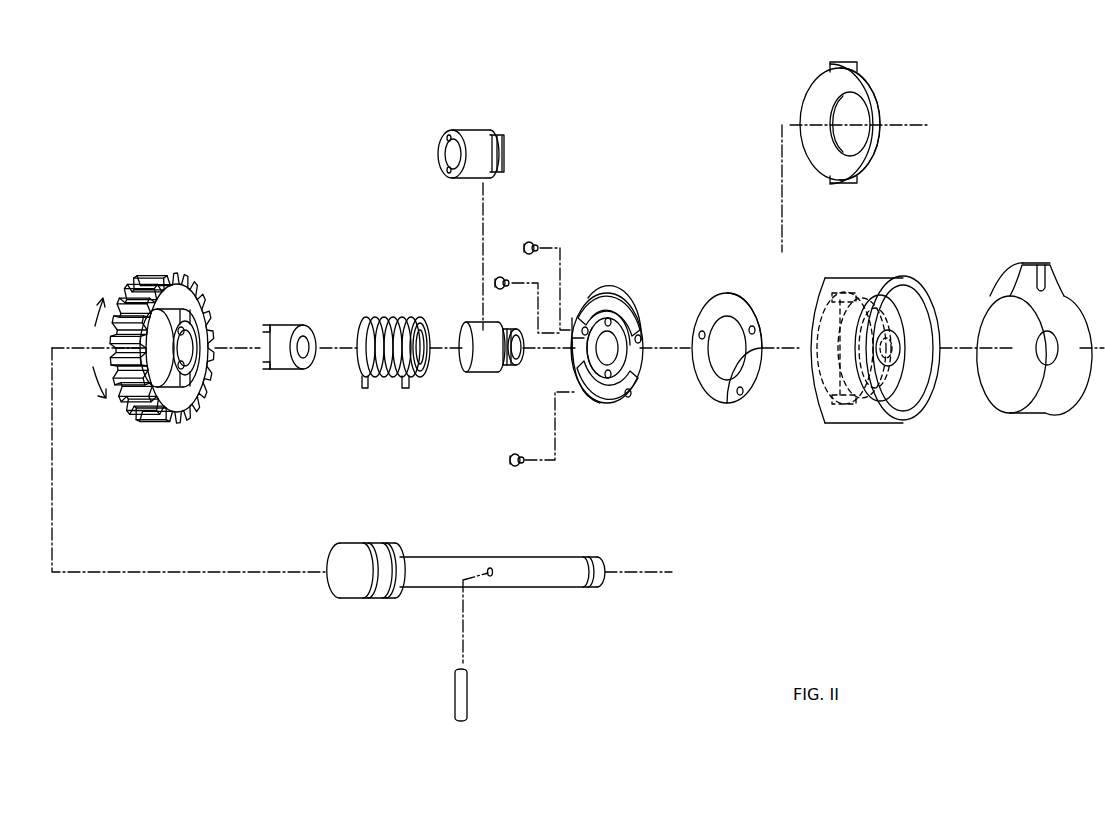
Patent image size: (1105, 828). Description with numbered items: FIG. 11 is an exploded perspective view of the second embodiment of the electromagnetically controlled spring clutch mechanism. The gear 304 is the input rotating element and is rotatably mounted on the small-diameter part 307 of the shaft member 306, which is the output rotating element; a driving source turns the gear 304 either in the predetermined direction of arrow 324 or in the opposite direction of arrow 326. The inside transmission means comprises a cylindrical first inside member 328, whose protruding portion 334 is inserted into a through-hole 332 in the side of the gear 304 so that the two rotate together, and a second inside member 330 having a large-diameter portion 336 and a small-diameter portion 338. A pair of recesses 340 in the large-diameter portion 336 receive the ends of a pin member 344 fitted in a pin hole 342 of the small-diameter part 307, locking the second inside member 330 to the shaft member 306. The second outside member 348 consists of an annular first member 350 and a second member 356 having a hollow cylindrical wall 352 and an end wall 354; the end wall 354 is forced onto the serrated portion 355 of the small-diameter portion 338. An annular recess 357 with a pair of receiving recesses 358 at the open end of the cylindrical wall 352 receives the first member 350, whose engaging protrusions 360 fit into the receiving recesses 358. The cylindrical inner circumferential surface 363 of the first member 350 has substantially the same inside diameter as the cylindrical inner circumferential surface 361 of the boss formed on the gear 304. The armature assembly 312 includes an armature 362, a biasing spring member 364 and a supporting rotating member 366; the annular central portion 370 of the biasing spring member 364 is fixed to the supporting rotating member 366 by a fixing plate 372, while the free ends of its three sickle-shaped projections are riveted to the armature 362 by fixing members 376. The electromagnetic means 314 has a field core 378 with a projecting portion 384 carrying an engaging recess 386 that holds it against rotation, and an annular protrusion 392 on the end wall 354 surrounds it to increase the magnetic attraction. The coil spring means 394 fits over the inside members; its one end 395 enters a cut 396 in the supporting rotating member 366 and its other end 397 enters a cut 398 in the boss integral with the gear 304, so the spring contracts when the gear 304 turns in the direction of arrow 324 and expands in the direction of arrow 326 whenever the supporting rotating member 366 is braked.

The gear 304 is at (174, 418).
The shaft member 306 is at (362, 543).
The small-diameter part 307 is at (430, 583).
The armature assembly 312 is at (644, 407).
The electromagnetic means 314 is at (1042, 414).
The arrow 324 is at (93, 309).
The arrow 326 is at (92, 393).
The first inside member 328 is at (283, 366).
The second inside member 330 is at (479, 380).
The through-hole 332 is at (199, 326).
The protruding portion 334 is at (265, 322).
The large-diameter portion 336 is at (470, 326).
The small-diameter portion 338 is at (505, 330).
The recesses 340 is at (169, 310).
The pin hole 342 is at (490, 568).
The pin member 344 is at (467, 694).
The second outside member 348 is at (878, 278).
The first member 350 is at (866, 158).
The hollow cylindrical wall 352 is at (868, 422).
The end wall 354 is at (913, 312).
The serrated portion 355 is at (505, 372).
The second member 356 is at (923, 422).
The annular recess 357 is at (820, 320).
The receiving recesses 358 is at (826, 294).
The engaging protrusions 360 is at (838, 62).
The cylindrical inner circumferential surface 361 is at (191, 357).
The armature 362 is at (730, 298).
The cylindrical inner circumferential surface 363 is at (862, 104).
The biasing spring member 364 is at (636, 300).
The supporting rotating member 366 is at (578, 315).
The annular central portion 370 is at (605, 300).
The fixing plate 372 is at (630, 355).
The fixing member 376 is at (520, 466).
The field core 378 is at (1065, 320).
The projecting portion 384 is at (1022, 296).
The engaging recess 386 is at (1042, 276).
The annular protrusion 392 is at (927, 385).
The coil spring means 394 is at (381, 317).
The one end 395 is at (406, 388).
The cut 396 is at (572, 350).
The other end 397 is at (362, 388).
The cut 398 is at (195, 392).